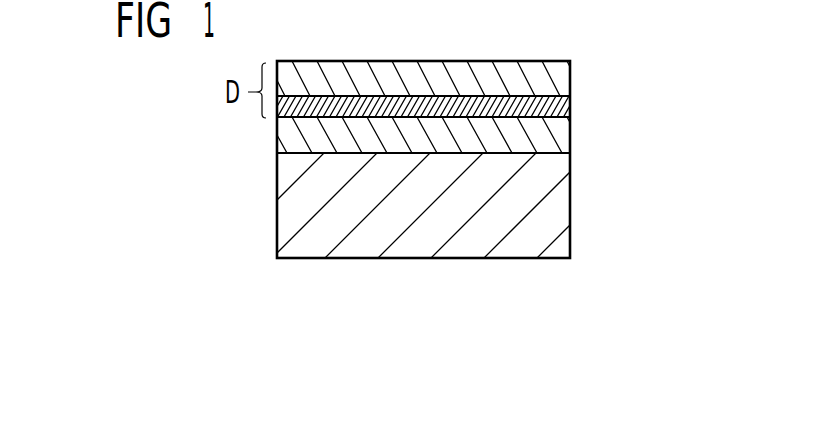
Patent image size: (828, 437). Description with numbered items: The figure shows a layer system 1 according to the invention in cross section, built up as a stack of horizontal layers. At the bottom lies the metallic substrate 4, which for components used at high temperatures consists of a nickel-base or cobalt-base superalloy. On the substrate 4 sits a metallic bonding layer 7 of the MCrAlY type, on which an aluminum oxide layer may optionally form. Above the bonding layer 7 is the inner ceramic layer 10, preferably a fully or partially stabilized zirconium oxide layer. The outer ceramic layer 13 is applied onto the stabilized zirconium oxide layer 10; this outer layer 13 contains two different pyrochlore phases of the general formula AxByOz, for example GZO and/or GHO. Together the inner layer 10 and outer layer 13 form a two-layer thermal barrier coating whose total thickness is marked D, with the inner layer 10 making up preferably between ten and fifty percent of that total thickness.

The layer system 1 is at (228, 208).
The metallic substrate 4 is at (555, 208).
The metallic bonding layer 7 is at (560, 143).
The inner ceramic layer 10 is at (570, 107).
The outer ceramic layer 13 is at (552, 78).